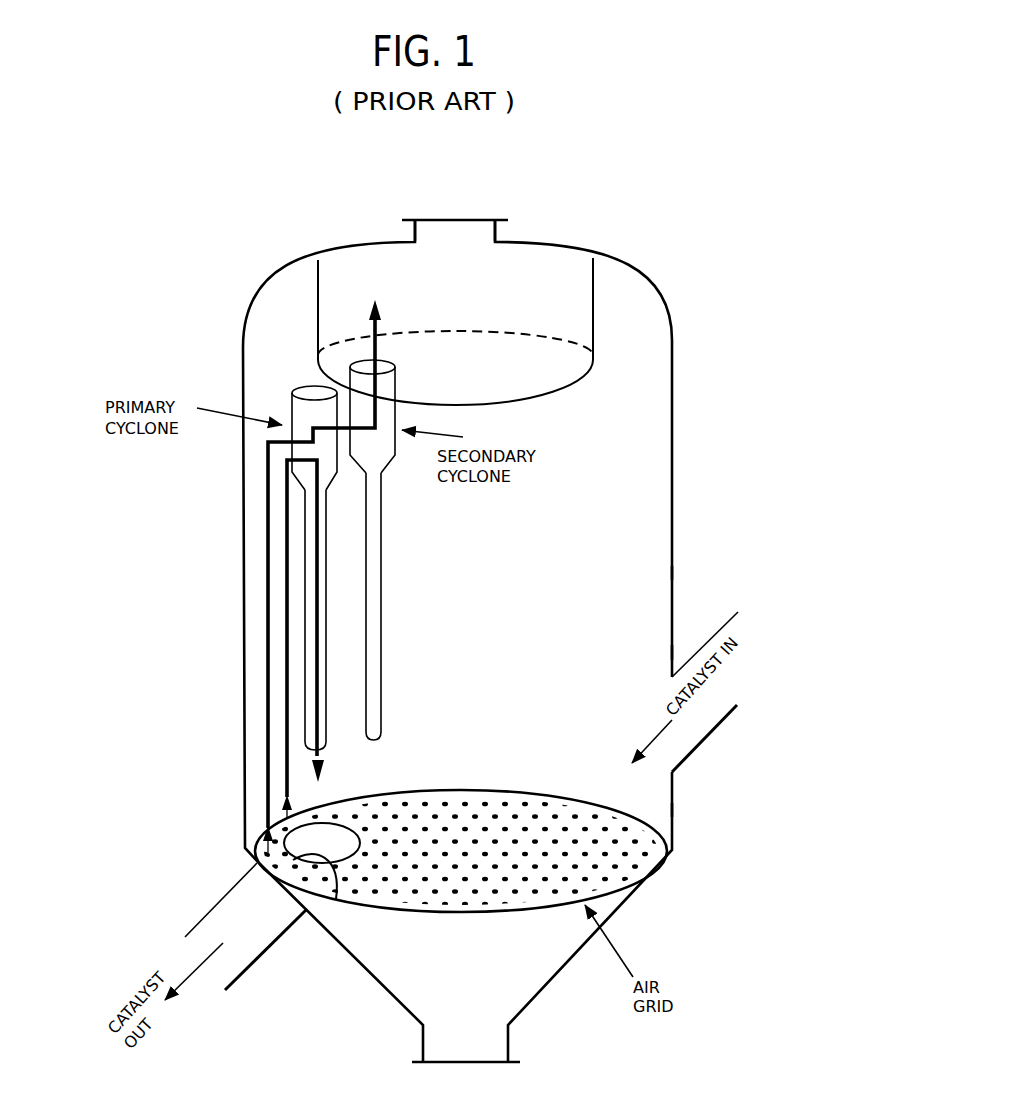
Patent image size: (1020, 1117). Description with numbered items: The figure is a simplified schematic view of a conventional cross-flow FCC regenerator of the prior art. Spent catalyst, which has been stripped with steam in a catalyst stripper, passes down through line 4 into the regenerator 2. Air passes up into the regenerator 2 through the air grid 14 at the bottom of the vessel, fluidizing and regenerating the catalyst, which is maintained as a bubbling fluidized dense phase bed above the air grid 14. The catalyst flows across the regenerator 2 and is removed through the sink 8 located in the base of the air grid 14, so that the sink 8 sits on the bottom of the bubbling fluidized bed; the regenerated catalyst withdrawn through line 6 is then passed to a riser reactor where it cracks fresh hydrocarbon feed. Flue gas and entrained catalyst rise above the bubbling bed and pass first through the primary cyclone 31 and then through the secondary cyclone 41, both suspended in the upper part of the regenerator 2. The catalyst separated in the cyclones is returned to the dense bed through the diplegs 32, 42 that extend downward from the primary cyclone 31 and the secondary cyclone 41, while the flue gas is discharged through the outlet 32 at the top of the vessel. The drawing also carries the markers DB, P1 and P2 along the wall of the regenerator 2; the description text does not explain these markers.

The regenerator 2 is at (672, 490).
The spent catalyst line 4 is at (717, 722).
The regenerated catalyst line 6 is at (250, 967).
The sink 8 is at (333, 912).
The air grid 14 is at (623, 883).
The primary cyclone 31 is at (297, 408).
The dipleg 32 is at (328, 618).
The secondary cyclone 41 is at (355, 398).
The dipleg 42 is at (382, 643).
The dense bed level DB is at (672, 573).
The pressure point 1 P1 is at (672, 810).
The pressure point 2 P2 is at (672, 652).